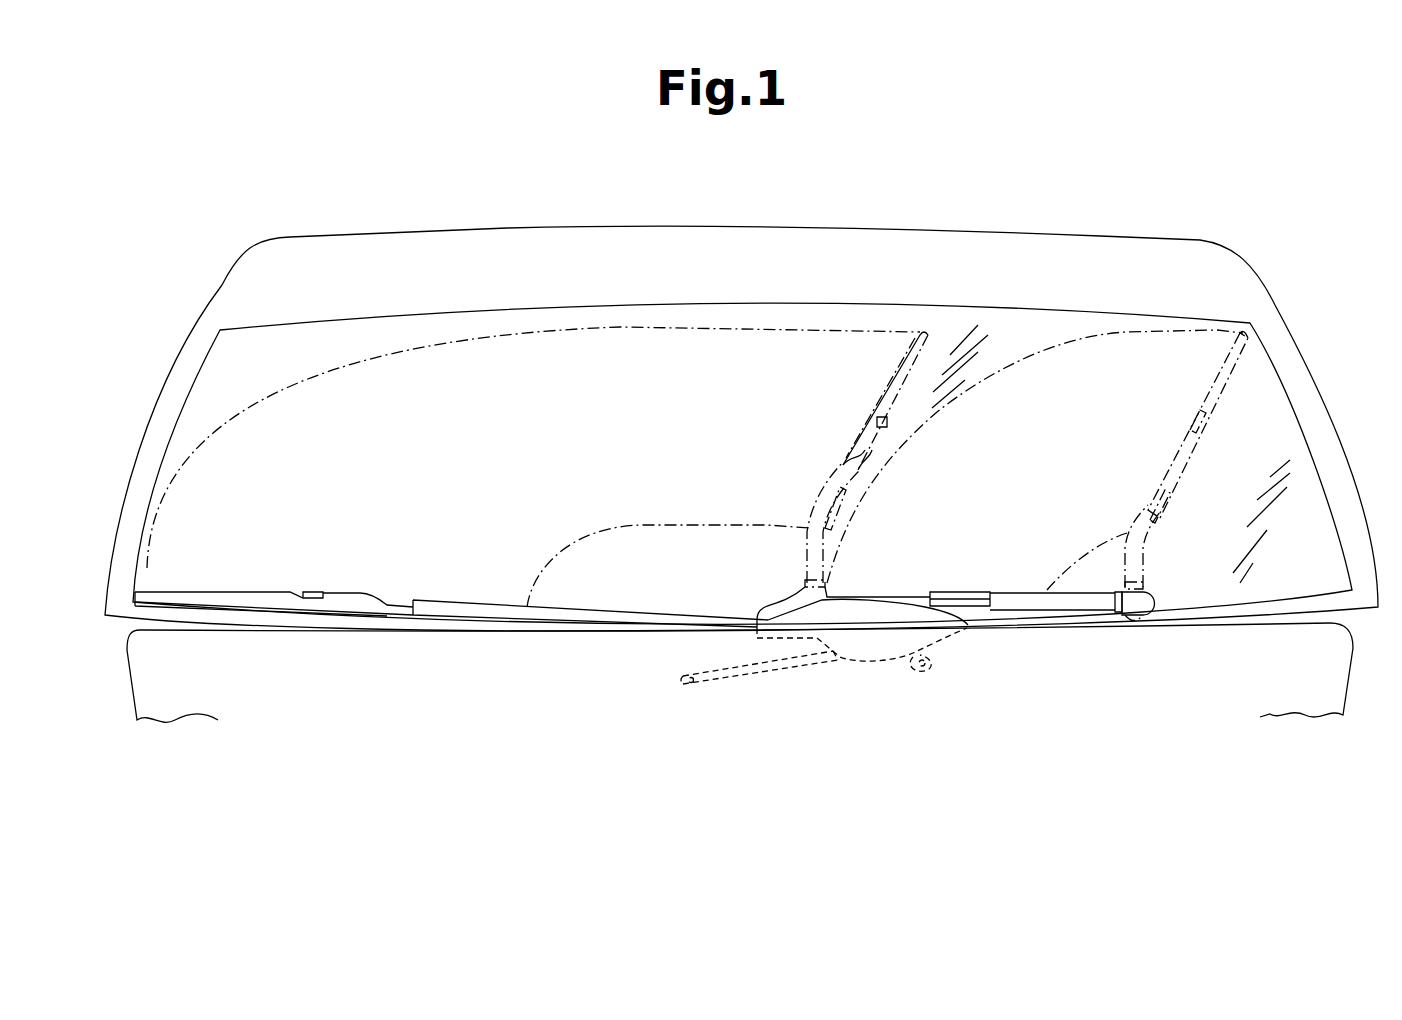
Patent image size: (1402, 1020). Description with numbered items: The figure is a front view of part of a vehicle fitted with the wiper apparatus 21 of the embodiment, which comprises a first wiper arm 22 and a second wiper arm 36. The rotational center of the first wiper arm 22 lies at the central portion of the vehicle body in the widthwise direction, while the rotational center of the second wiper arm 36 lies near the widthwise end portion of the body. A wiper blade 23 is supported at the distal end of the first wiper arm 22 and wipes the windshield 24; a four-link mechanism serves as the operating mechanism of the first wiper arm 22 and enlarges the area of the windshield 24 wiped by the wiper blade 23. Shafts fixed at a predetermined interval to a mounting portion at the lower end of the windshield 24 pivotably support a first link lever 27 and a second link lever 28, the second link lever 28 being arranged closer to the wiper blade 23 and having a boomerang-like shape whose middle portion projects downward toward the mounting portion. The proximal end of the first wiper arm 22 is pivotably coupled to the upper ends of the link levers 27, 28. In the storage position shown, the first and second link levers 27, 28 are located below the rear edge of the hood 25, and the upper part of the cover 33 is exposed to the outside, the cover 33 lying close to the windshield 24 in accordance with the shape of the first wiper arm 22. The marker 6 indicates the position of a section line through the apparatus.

The section line 6- 6 is at (922, 198).
The wiper apparatus 21 is at (607, 613).
The first wiper arm 22 is at (817, 503).
The wiper blade 23 is at (240, 592).
The windshield 24 is at (300, 352).
The hood 25 is at (142, 685).
The first link lever 27 is at (943, 642).
The second link lever 28 is at (745, 696).
The cover 33 is at (878, 607).
The second wiper arm 36 is at (1137, 507).